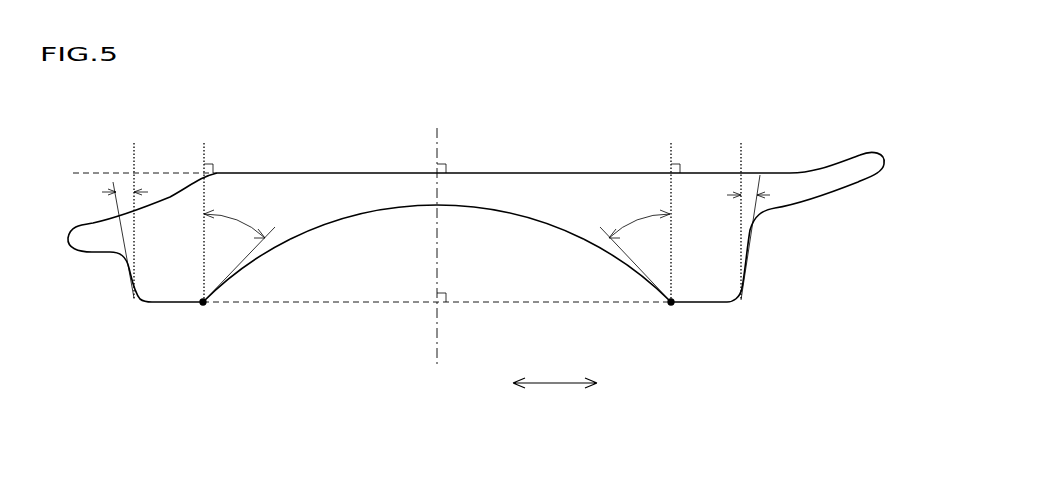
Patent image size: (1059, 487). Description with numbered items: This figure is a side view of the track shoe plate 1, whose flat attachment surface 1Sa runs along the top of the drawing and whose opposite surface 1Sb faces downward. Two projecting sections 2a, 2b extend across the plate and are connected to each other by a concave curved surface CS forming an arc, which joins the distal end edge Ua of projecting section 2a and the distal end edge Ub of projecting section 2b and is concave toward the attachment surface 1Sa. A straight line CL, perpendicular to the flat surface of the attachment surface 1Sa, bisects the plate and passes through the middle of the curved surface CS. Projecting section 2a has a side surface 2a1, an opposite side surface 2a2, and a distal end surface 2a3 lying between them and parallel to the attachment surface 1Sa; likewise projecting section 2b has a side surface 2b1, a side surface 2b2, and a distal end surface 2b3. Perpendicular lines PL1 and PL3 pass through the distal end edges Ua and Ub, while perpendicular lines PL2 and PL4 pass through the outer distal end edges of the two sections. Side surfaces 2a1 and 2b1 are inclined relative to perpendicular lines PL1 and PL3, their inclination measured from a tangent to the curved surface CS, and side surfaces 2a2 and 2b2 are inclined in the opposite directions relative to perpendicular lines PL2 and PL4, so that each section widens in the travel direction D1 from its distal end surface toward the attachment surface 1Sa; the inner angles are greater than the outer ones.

The track shoe plate 1 is at (833, 180).
The attachment surface 1Sa is at (532, 172).
The lower curved surface 1Sb is at (530, 219).
The concave curved surface CS is at (390, 208).
The straight line CL is at (437, 237).
The projecting section 2a is at (726, 286).
The side surface 2a1 is at (636, 272).
The side surface 2a2 is at (747, 264).
The distal end surface 2a3 is at (697, 304).
The projecting section 2b is at (150, 288).
The side surface 2b1 is at (238, 272).
The side surface 2b2 is at (131, 282).
The distal end surface 2b3 is at (177, 304).
The distal end edge Ua is at (667, 305).
The distal end edge Ub is at (207, 305).
The perpendicular line PL1 is at (667, 211).
The perpendicular line PL2 is at (739, 211).
The perpendicular line PL3 is at (202, 211).
The perpendicular line PL4 is at (135, 211).
The travel direction D1 is at (555, 395).